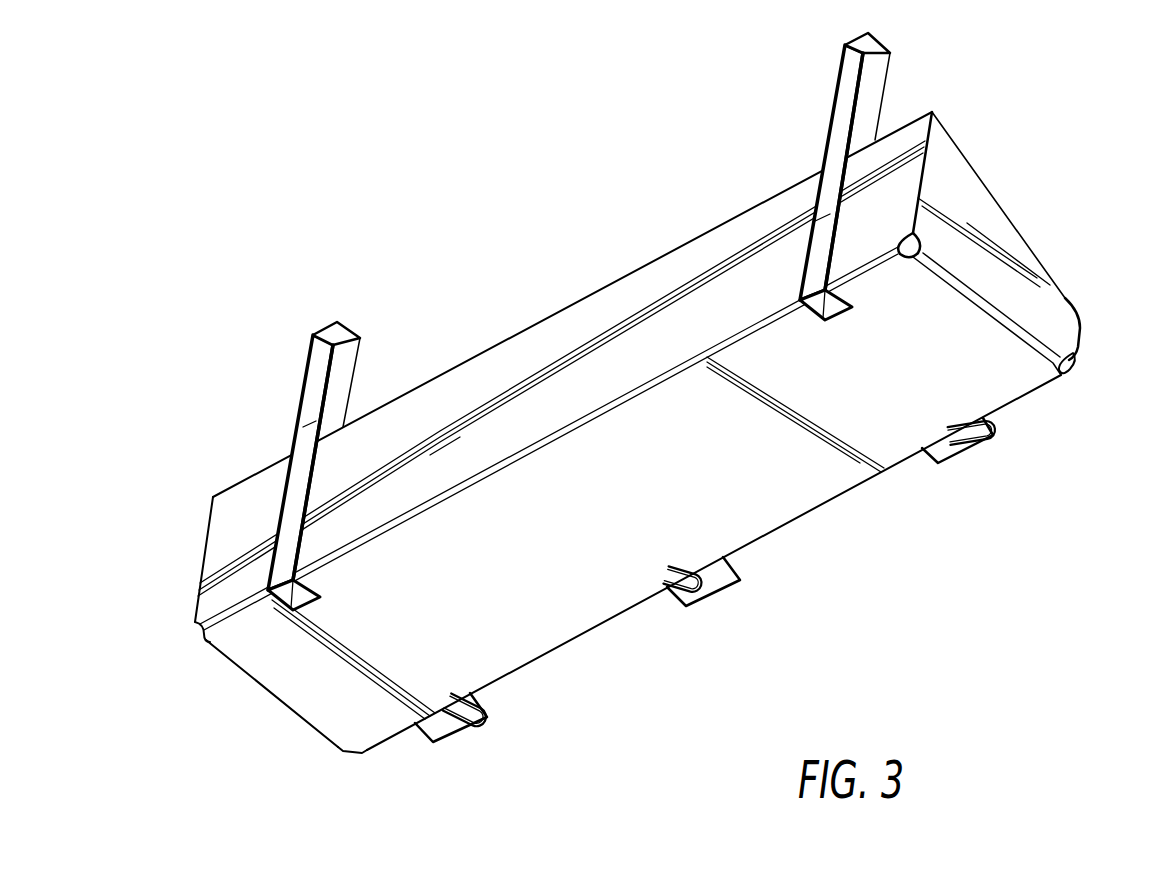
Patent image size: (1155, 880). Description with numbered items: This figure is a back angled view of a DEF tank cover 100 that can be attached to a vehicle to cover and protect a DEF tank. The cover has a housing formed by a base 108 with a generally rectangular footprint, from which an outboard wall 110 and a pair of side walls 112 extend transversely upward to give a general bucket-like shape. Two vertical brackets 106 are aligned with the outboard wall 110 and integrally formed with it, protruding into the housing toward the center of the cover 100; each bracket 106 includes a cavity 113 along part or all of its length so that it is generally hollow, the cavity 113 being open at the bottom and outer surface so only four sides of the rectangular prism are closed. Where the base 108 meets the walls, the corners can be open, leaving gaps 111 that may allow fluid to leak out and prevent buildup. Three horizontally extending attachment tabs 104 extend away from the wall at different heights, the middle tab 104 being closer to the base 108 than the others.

The DEF tank cover 100 is at (310, 224).
The attachment tabs 104 is at (734, 598).
The vertical brackets 106 is at (591, 321).
The base 108 is at (297, 686).
The outboard wall 110 is at (610, 298).
The corner gaps 111 is at (923, 252).
The side walls 112 is at (972, 193).
The cavity 113 is at (301, 372).